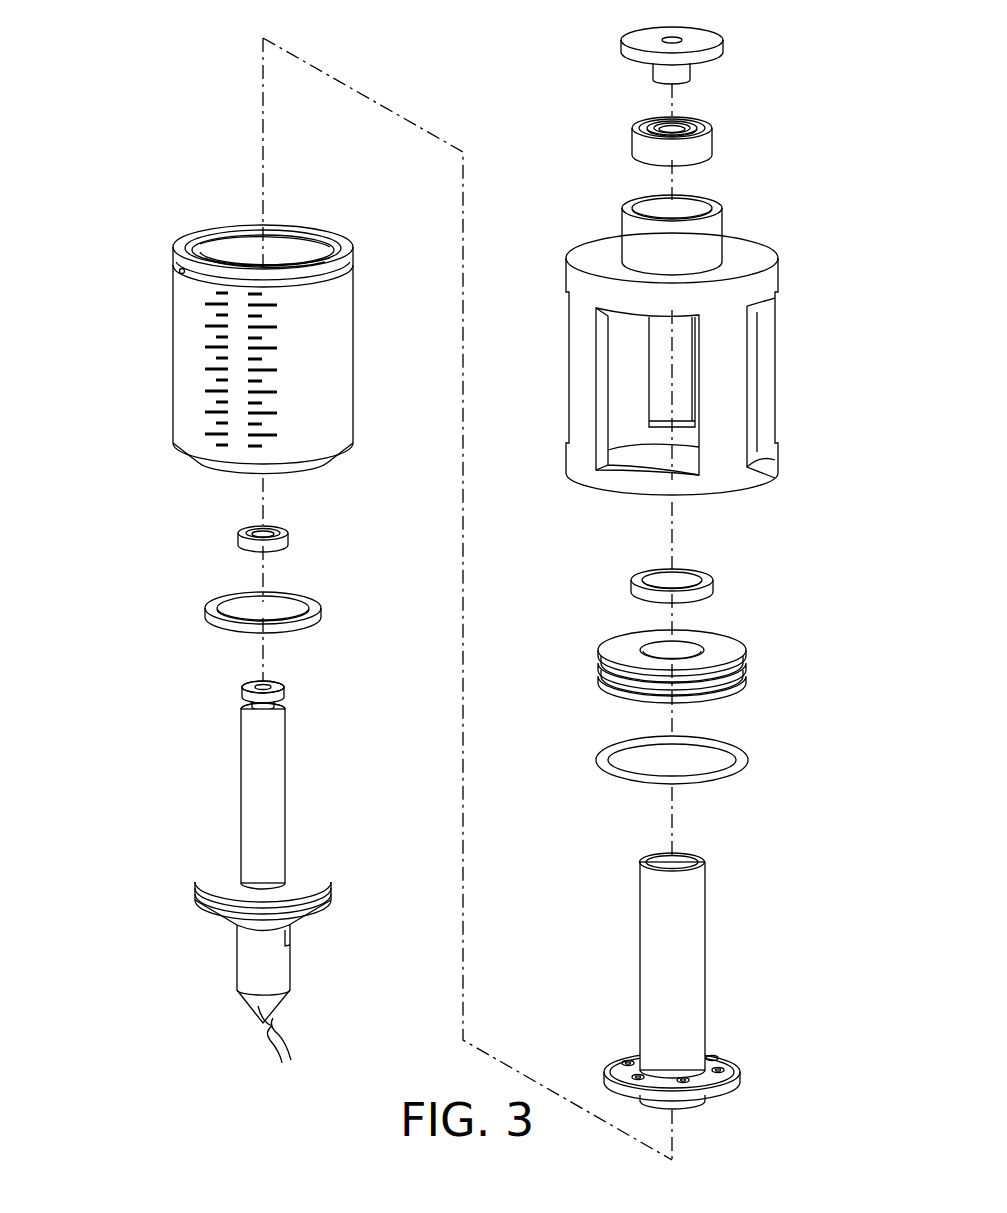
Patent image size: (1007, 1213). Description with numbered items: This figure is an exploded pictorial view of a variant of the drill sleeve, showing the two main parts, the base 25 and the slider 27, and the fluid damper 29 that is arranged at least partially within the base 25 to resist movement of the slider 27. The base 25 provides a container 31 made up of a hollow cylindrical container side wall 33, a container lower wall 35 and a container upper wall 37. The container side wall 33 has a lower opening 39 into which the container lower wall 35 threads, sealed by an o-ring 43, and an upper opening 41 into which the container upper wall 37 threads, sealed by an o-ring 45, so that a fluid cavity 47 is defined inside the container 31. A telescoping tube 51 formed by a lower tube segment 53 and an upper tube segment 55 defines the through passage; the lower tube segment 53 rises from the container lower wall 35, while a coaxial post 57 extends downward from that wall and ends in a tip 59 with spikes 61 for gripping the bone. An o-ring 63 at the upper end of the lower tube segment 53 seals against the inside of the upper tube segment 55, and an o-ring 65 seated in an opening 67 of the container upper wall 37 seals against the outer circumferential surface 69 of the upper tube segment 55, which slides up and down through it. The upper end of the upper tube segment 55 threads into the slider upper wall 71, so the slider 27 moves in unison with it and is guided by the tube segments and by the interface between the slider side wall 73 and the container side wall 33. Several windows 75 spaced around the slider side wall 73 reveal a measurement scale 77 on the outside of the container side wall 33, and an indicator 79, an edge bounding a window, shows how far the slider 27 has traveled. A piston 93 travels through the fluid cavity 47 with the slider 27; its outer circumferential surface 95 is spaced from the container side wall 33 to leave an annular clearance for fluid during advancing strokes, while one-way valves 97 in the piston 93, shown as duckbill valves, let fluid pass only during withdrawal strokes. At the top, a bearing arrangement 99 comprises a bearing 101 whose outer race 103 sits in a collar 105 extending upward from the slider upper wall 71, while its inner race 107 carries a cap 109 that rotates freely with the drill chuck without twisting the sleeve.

The base 25 is at (250, 334).
The slider 27 is at (712, 665).
The fluid damper 29 is at (278, 224).
The container 31 is at (257, 334).
The container side wall 33 is at (190, 357).
The container lower wall 35 is at (235, 918).
The container upper wall 37 is at (690, 650).
The lower opening 39 is at (300, 477).
The upper opening 41 is at (300, 232).
The o-ring 43 is at (222, 625).
The o-ring 45 is at (623, 748).
The fluid cavity 47 is at (190, 401).
The tube 51 is at (268, 888).
The lower tube segment 53 is at (265, 818).
The upper tube segment 55 is at (686, 981).
The post 57 is at (300, 962).
The tip 59 is at (276, 1002).
The spikes 61 is at (284, 1051).
The o-ring 63 is at (240, 538).
The o-ring 65 is at (708, 576).
The opening 67 is at (660, 636).
The outer circumferential surface 69 is at (700, 898).
The slider upper wall 71 is at (679, 339).
The slider side wall 73 is at (679, 388).
The windows 75 is at (762, 334).
The measurement scale 77 is at (283, 343).
The indicator 79 is at (640, 472).
The piston 93 is at (686, 1063).
The outer circumferential surface 95 is at (611, 1080).
The one-way valves 97 is at (627, 1060).
The bearing arrangement 99 is at (683, 91).
The bearing 101 is at (669, 128).
The outer race 103 is at (705, 145).
The collar 105 is at (631, 228).
The inner race 107 is at (690, 120).
The cap 109 is at (641, 37).